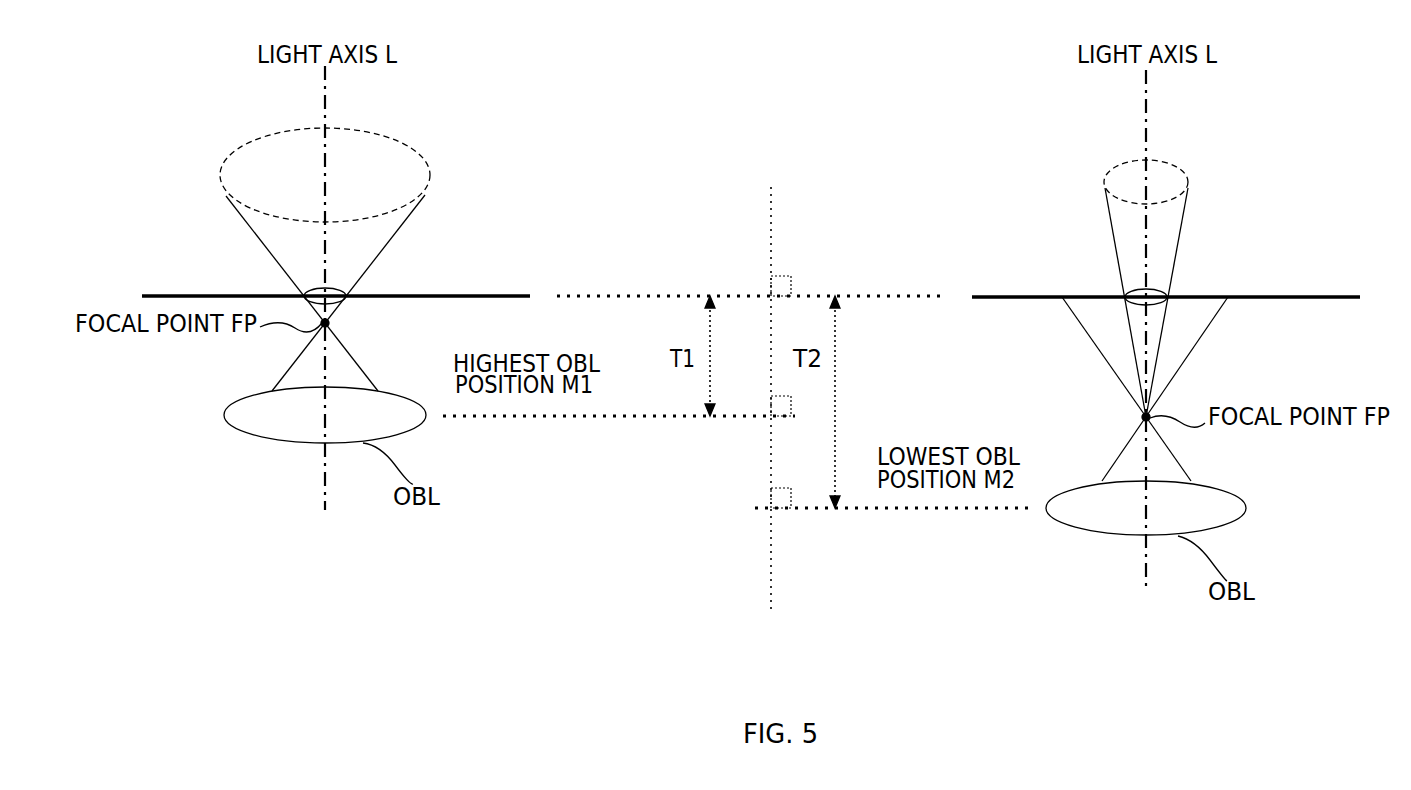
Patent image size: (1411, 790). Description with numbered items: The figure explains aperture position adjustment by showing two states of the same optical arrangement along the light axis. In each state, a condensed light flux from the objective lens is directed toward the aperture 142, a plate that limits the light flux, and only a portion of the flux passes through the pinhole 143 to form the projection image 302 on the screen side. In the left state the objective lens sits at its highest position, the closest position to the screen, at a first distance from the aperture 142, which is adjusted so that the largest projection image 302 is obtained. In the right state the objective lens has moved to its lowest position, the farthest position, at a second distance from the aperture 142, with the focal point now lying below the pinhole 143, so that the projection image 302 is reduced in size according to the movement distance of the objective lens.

The projection image 302 is at (390, 141).
The aperture 142 is at (453, 295).
The pinhole 143 is at (337, 310).